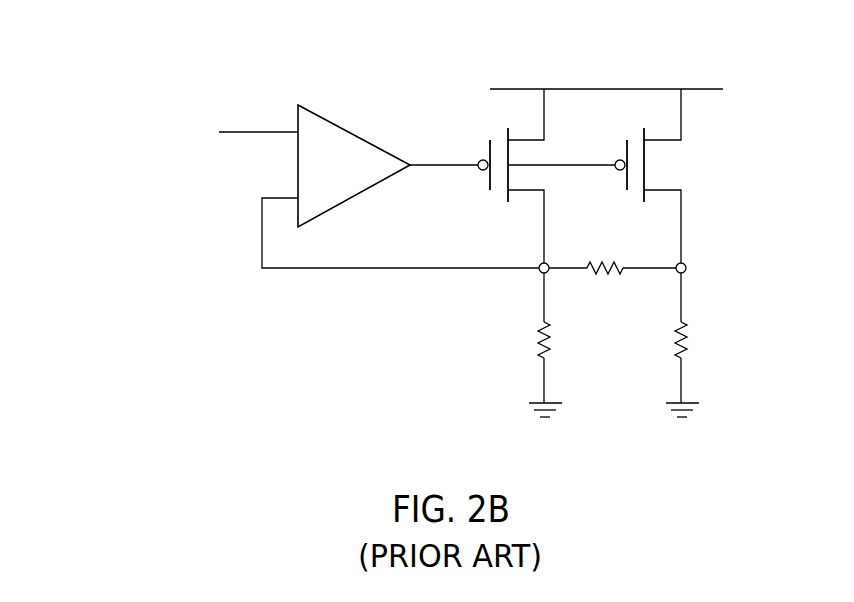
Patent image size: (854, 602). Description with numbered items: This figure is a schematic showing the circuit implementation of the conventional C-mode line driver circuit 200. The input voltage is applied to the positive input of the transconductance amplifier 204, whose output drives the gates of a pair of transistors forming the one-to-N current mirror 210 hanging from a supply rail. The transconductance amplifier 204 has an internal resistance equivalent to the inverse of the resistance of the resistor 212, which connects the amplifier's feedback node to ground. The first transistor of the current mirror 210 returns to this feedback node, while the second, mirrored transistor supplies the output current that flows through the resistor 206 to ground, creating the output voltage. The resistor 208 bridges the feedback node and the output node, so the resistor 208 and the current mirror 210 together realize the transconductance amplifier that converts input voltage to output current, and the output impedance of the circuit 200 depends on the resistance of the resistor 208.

The C-mode line driver circuit 200 is at (143, 85).
The transconductance amplifier 204 is at (360, 134).
The resistor 206 is at (689, 342).
The resistor 208 is at (606, 262).
The 1:N current mirror 210 is at (583, 162).
The resistor 212 is at (554, 342).